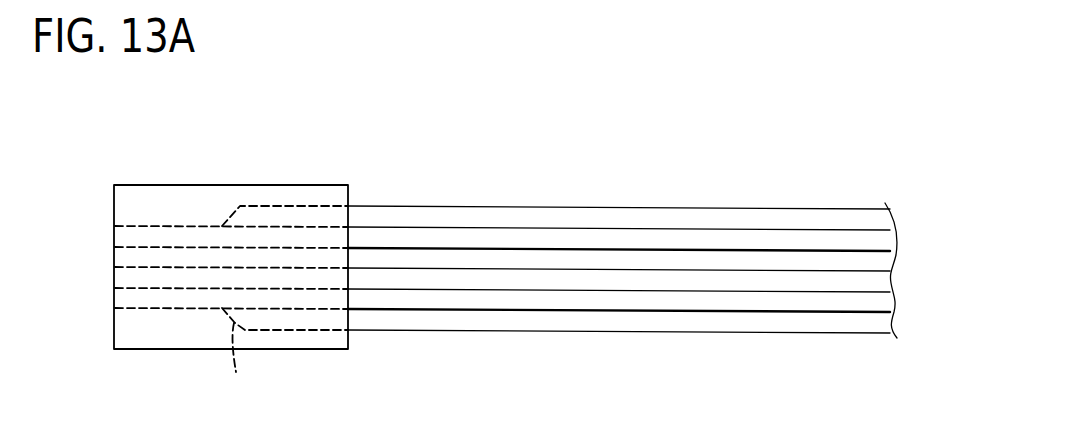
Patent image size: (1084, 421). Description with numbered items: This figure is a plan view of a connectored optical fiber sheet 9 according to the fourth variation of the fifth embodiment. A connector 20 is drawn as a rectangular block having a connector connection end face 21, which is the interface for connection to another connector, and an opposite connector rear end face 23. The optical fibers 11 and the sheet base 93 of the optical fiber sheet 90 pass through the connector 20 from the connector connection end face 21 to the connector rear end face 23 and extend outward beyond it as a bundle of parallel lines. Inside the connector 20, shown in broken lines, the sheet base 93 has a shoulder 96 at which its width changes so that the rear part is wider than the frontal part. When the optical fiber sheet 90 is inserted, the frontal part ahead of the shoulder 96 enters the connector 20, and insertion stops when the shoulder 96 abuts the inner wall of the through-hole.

The connectored optical fiber sheet 9 is at (410, 183).
The optical fibers 11 is at (690, 303).
The connector 20 is at (203, 185).
The connector connection end face 21 is at (114, 339).
The connector rear end face 23 is at (348, 339).
The optical fiber sheet 90 is at (775, 142).
The sheet base 93 is at (755, 220).
The shoulder 96 is at (282, 356).